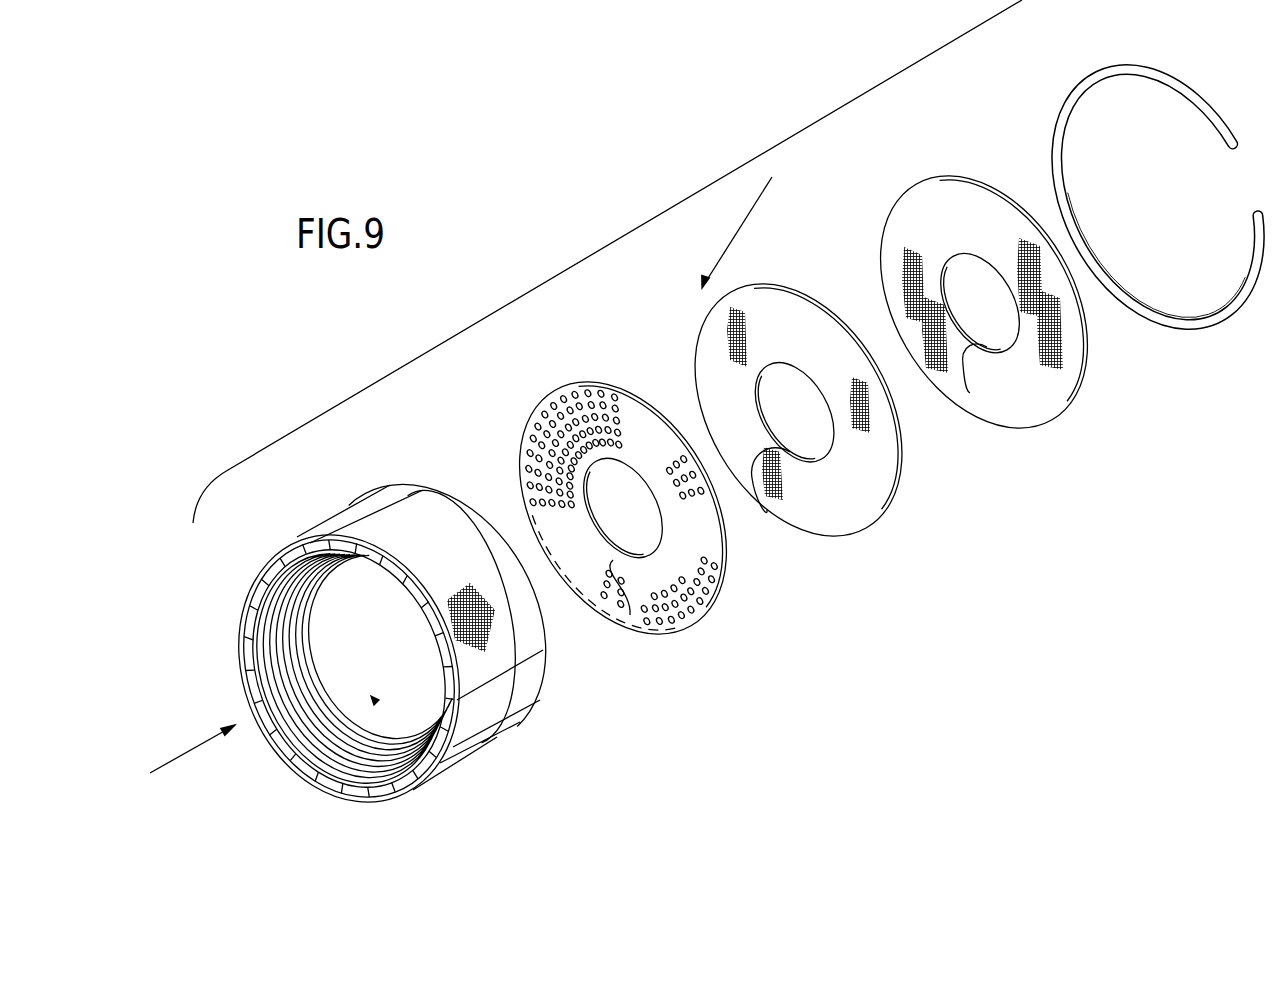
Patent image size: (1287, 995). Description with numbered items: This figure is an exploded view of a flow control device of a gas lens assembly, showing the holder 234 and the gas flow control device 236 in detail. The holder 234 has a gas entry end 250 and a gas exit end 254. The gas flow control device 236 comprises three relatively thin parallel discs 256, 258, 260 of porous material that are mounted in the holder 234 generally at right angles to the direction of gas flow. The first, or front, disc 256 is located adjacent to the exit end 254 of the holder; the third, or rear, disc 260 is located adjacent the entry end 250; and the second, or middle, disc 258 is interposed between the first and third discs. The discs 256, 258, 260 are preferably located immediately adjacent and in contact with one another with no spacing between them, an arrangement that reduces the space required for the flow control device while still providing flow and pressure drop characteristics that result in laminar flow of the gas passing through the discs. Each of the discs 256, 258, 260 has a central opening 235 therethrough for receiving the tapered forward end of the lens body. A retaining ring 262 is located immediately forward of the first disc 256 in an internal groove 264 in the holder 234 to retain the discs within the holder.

The holder 234 is at (343, 513).
The central opening 235 is at (630, 615).
The gas flow control device 236 is at (762, 220).
The gas entry end 250 is at (393, 790).
The gas exit end 254 is at (387, 618).
The first disc 256 is at (1055, 392).
The second disc 258 is at (873, 490).
The third disc 260 is at (700, 612).
The retaining ring 262 is at (1177, 322).
The internal groove 264 is at (352, 683).